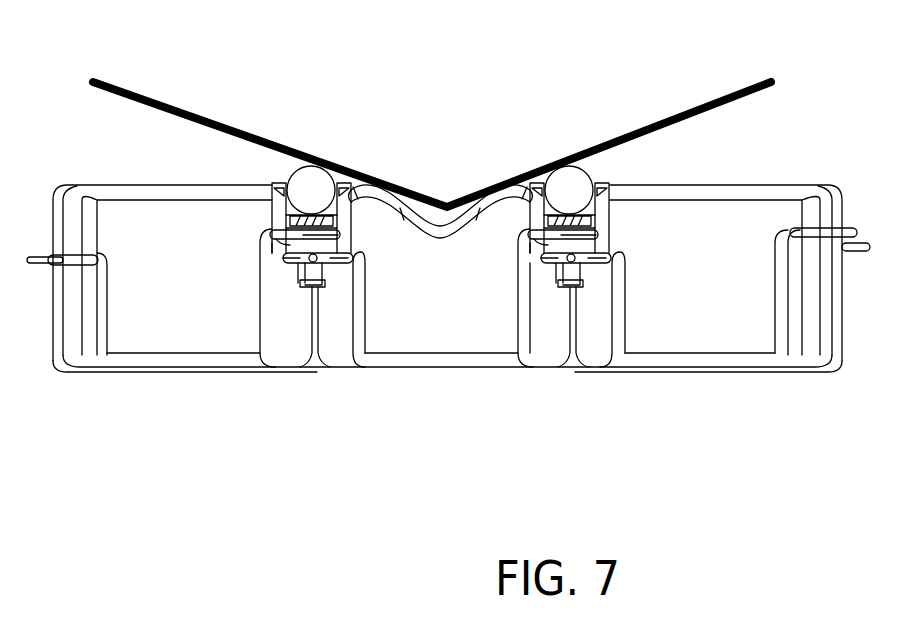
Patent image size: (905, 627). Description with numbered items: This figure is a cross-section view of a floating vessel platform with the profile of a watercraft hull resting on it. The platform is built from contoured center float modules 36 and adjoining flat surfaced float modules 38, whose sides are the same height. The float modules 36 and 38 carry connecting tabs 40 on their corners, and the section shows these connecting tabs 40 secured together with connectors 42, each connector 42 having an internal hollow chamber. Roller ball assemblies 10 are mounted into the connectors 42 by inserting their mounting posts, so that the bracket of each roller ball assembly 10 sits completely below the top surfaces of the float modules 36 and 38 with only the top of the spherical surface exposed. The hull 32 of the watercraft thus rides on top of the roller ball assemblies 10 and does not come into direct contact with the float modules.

The roller ball assembly 10 is at (297, 178).
The bar / workpiece 32 is at (572, 128).
The contoured center float module 36 is at (482, 330).
The flat surfaced float module 38 is at (175, 343).
The connecting tab 40 is at (343, 264).
The connector 42 is at (307, 285).